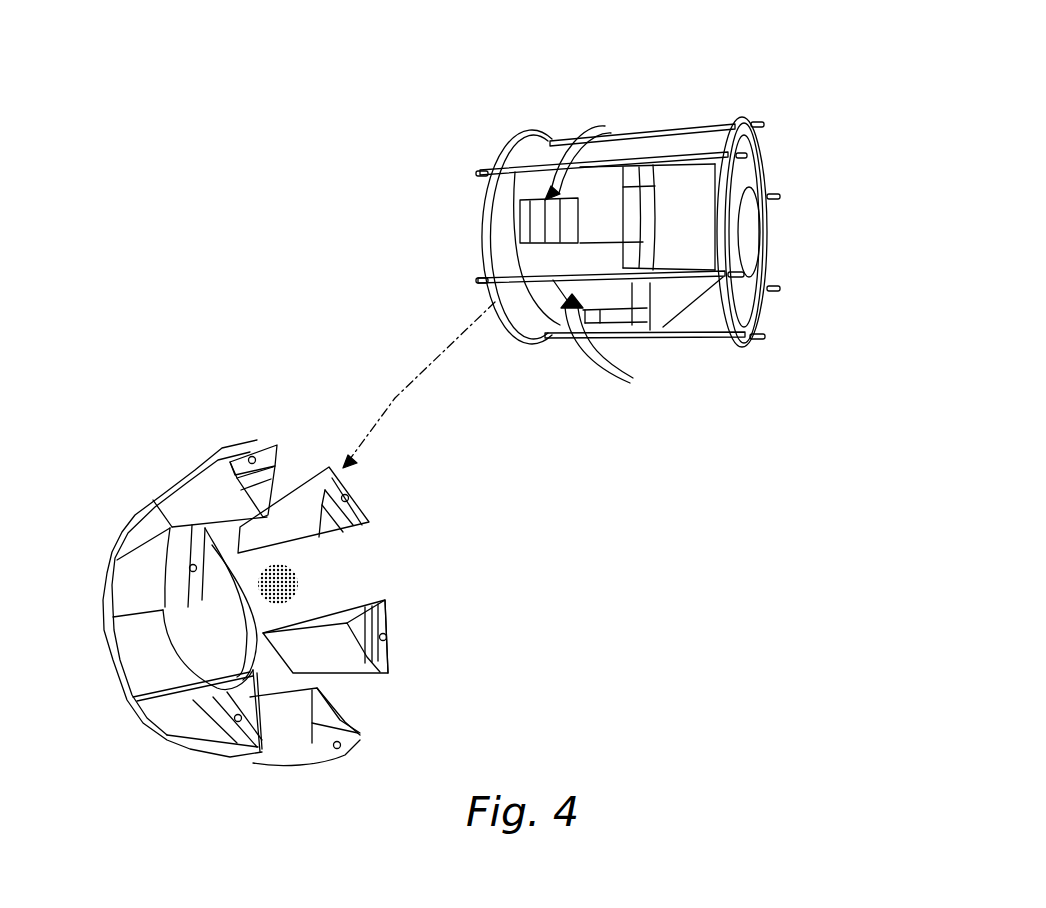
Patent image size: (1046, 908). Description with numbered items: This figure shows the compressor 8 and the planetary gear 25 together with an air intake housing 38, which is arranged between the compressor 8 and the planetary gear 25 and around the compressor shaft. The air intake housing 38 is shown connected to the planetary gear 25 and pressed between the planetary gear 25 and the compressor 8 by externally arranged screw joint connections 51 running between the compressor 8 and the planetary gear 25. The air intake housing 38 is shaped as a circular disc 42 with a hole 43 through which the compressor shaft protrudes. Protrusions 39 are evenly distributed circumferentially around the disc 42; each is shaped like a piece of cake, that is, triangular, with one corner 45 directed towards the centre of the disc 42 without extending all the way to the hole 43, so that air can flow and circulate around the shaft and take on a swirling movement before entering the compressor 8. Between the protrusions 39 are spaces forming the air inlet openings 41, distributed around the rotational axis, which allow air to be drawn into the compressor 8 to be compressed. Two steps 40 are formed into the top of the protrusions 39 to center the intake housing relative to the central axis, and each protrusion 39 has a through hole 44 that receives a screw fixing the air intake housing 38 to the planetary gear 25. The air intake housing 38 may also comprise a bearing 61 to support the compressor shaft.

The compressor 8 is at (507, 173).
The planetary gear 25 is at (637, 138).
The air intake housing 38 is at (573, 152).
The protrusions 39 is at (350, 607).
The steps 40 is at (373, 645).
The air inlet openings 41 is at (532, 197).
The circular disc 42 is at (128, 635).
The hole 43 is at (195, 643).
The through hole 44 is at (262, 443).
The corner 45 is at (290, 610).
The screw joint connections 51 is at (708, 123).
The bearing 61 is at (298, 572).